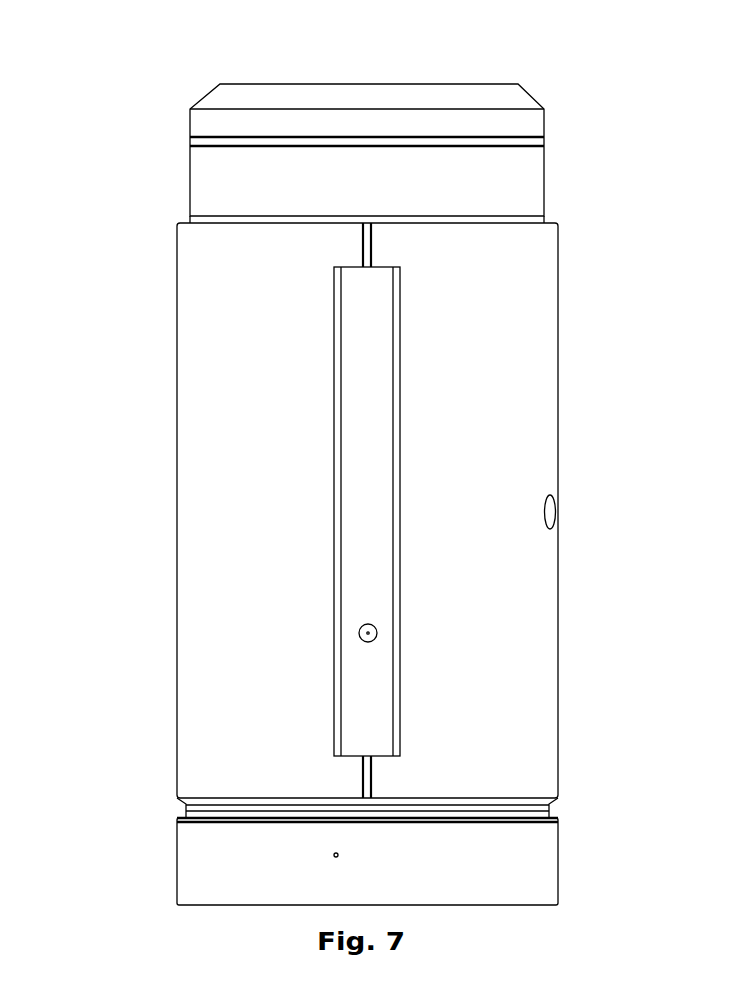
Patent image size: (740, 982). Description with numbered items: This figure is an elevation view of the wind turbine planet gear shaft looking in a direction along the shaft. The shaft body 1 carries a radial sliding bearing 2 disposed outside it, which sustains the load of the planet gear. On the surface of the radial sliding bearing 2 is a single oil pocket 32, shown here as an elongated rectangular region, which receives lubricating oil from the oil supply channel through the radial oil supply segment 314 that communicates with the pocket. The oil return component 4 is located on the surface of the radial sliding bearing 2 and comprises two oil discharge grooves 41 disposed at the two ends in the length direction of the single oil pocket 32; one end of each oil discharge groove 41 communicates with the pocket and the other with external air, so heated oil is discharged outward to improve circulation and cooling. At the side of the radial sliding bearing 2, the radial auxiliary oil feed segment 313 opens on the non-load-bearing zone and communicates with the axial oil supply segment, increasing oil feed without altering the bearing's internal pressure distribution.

The shaft body 1 is at (294, 112).
The radial sliding bearing 2 is at (302, 564).
The single oil pocket 32 is at (223, 511).
The oil discharge groove 41 is at (209, 253).
The oil return component 4 is at (209, 755).
The radial auxiliary oil feed segment 313 is at (596, 510).
The radial oil supply segment 314 is at (212, 649).